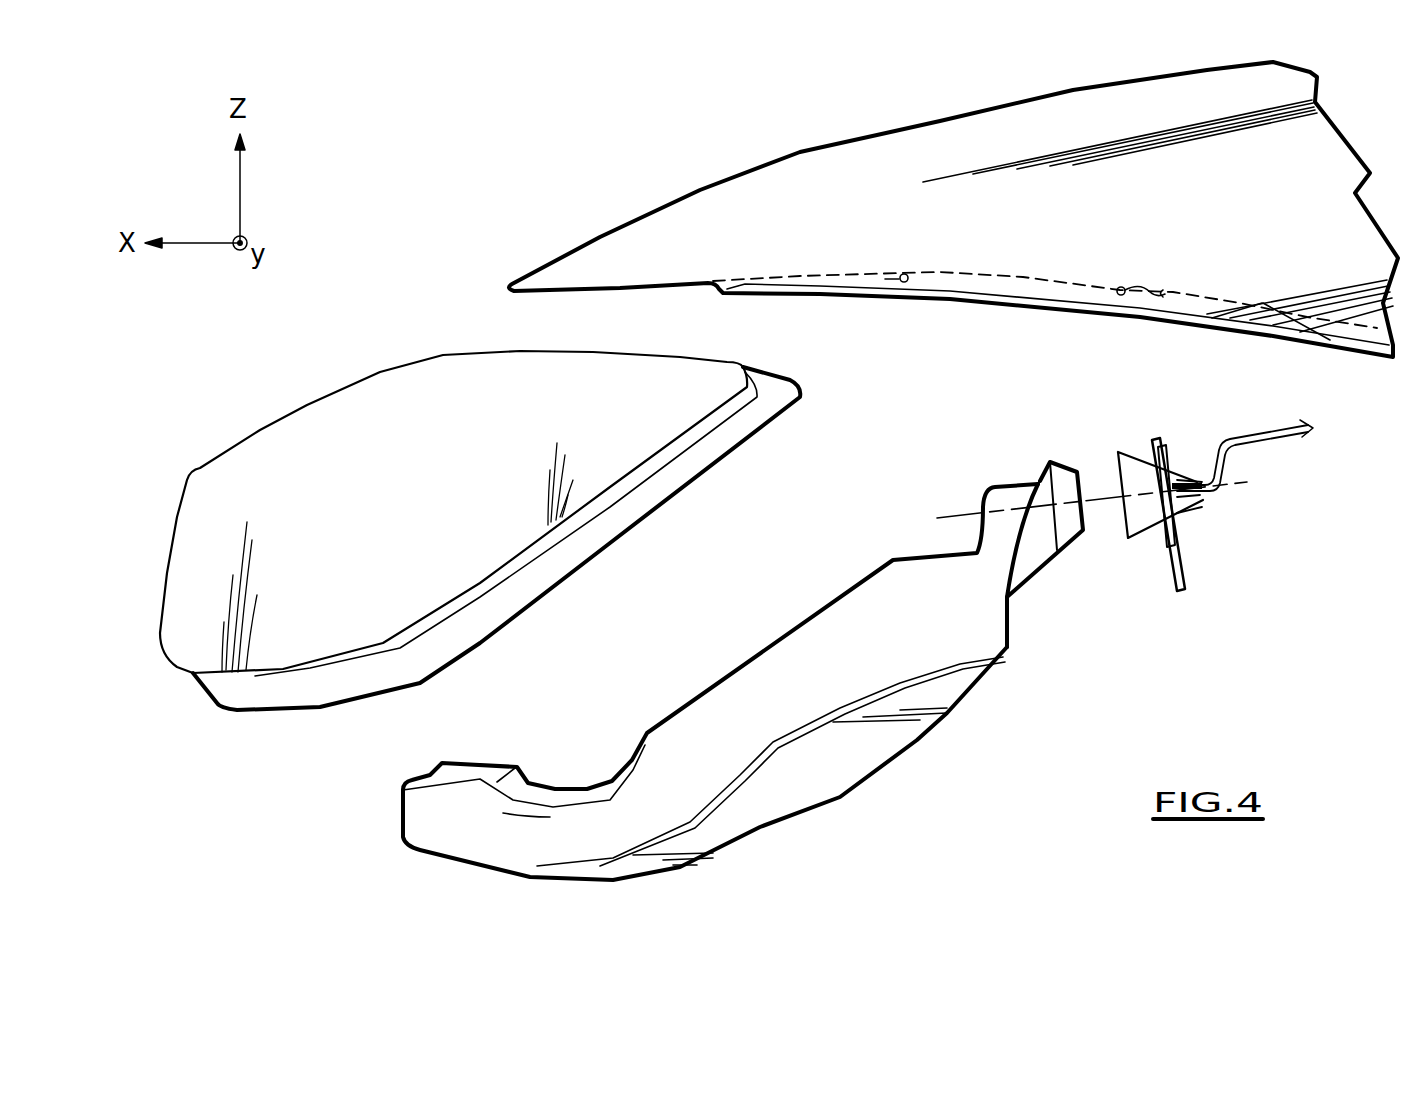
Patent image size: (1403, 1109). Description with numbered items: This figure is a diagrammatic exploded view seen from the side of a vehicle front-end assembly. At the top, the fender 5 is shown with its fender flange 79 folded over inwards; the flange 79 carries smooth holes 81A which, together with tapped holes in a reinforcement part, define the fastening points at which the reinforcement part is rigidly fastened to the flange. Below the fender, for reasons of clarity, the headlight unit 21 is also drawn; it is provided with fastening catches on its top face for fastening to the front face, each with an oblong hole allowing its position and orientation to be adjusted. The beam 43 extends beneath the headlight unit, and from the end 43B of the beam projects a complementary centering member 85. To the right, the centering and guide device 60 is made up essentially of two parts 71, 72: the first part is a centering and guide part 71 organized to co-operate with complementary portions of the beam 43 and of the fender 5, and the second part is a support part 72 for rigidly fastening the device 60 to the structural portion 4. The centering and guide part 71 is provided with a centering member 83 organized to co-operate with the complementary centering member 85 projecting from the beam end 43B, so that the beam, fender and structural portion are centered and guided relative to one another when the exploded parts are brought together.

The structural portion 4 is at (1275, 443).
The fender 5 is at (880, 167).
The headlight unit 21 is at (318, 428).
The beam 43 is at (752, 815).
The end of the beam 43B is at (988, 627).
The centering and guide device 60 is at (1177, 471).
The centering and guide part 71 is at (1160, 540).
The support part 72 is at (1187, 505).
The fender flange 79 is at (1025, 282).
The smooth holes 81A is at (902, 276).
The centering member 83 is at (1130, 470).
The complementary centering member 85 is at (1060, 478).